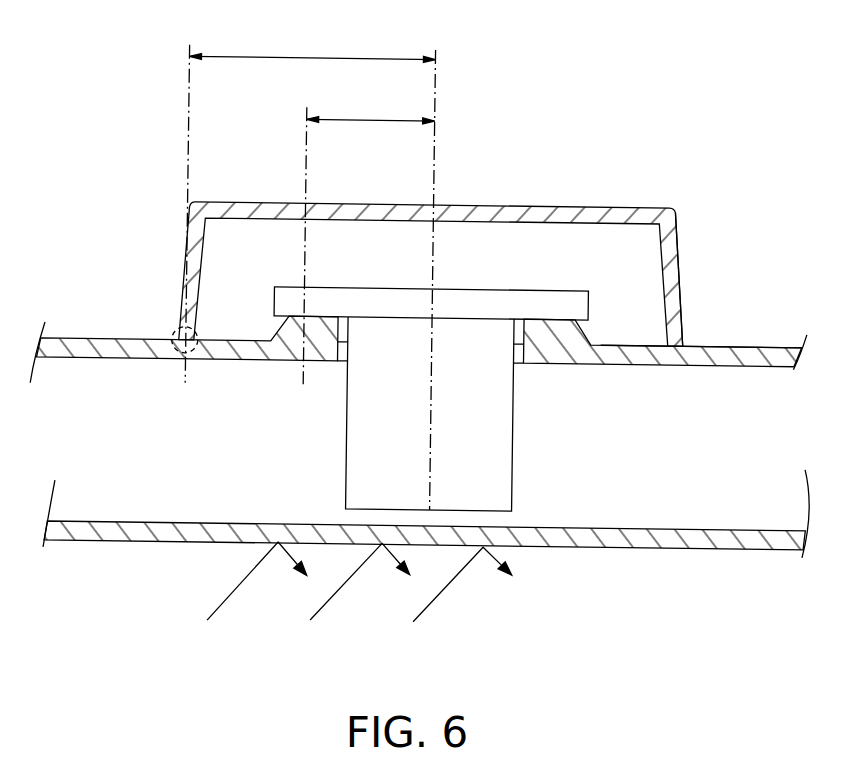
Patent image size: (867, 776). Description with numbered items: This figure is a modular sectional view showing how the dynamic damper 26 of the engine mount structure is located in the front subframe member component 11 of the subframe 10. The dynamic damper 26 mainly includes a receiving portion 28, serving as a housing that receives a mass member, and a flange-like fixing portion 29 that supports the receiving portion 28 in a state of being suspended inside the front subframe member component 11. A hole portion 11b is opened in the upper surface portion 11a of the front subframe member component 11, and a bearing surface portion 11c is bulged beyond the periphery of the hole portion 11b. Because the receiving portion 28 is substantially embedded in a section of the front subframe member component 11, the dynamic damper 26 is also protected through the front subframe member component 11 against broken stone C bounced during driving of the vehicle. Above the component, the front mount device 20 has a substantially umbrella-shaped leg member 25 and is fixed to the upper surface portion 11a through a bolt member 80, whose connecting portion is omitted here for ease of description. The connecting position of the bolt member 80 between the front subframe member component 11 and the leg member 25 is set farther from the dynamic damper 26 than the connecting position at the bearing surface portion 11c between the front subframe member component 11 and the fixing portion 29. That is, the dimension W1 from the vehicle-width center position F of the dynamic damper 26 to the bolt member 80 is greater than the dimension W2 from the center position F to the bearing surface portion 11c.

The subframe 10 is at (420, 384).
The front subframe member component 11 is at (700, 552).
The upper surface portion 11a is at (756, 343).
The hole portion 11b is at (516, 348).
The bearing surface portion 11c is at (290, 302).
The front mount device 20 is at (477, 251).
The leg member 25 is at (678, 279).
The dynamic damper 26 is at (431, 313).
The receiving portion 28 is at (452, 357).
The fixing portion 29 is at (502, 299).
The bolt member 80 is at (172, 326).
The center position F is at (434, 71).
The dimension W1 is at (310, 209).
The dimension W2 is at (369, 240).
The broken stone C is at (447, 592).